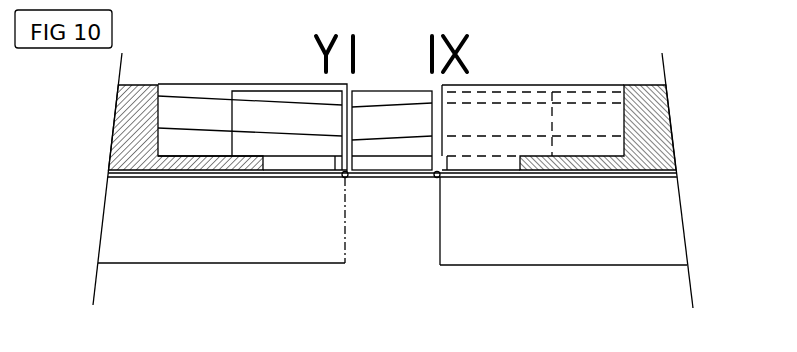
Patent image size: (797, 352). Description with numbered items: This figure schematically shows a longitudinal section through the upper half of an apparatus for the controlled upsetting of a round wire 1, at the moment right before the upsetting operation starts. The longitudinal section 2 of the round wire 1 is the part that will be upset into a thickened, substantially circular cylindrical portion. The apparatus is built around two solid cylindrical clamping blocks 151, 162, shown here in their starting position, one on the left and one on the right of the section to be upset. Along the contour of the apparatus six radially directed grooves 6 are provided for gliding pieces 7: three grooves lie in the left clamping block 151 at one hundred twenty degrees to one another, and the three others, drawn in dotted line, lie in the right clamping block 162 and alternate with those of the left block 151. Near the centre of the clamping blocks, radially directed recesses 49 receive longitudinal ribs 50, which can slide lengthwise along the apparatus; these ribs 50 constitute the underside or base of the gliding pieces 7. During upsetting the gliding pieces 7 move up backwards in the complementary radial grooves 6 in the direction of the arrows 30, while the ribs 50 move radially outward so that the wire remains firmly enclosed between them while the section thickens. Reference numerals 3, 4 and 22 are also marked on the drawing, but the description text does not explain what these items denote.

The round wire 1 is at (572, 176).
The longitudinal section 2 is at (392, 176).
The fastening pin 3 is at (353, 176).
The fastening pin 4 is at (432, 185).
The radial grooves 6 is at (179, 110).
The gliding pieces 7 is at (275, 94).
The lower layer 22 is at (195, 152).
The arrows 30 is at (228, 120).
The radial recesses 49 is at (279, 162).
The longitudinal ribs 50 is at (413, 161).
The left clamping block 151 is at (145, 156).
The right clamping block 162 is at (637, 156).